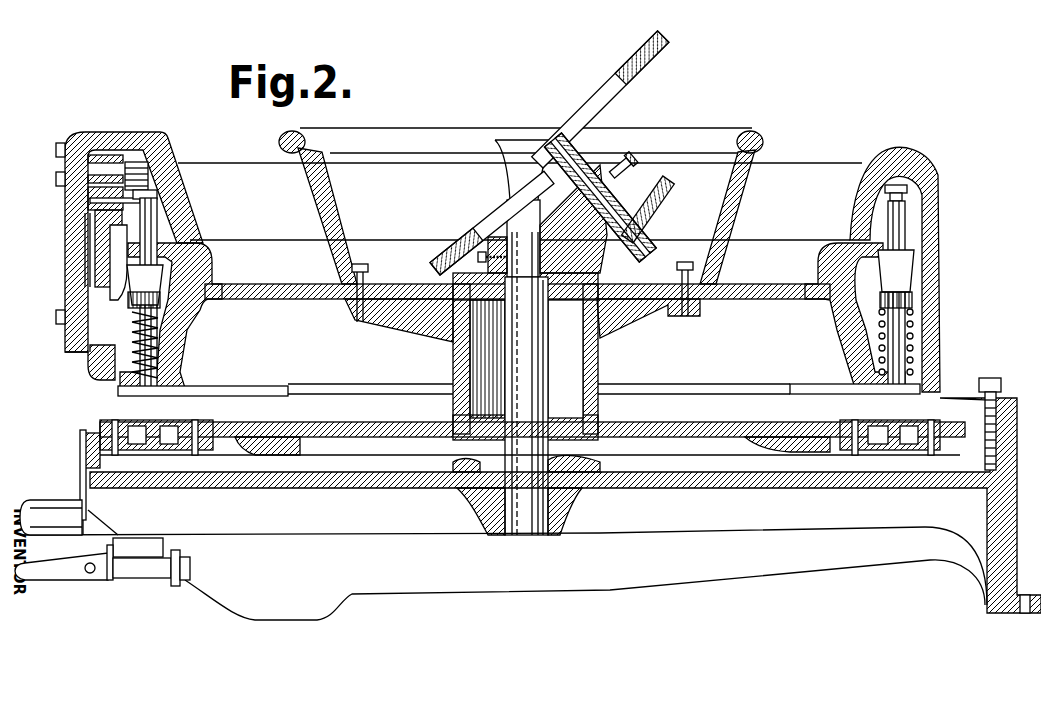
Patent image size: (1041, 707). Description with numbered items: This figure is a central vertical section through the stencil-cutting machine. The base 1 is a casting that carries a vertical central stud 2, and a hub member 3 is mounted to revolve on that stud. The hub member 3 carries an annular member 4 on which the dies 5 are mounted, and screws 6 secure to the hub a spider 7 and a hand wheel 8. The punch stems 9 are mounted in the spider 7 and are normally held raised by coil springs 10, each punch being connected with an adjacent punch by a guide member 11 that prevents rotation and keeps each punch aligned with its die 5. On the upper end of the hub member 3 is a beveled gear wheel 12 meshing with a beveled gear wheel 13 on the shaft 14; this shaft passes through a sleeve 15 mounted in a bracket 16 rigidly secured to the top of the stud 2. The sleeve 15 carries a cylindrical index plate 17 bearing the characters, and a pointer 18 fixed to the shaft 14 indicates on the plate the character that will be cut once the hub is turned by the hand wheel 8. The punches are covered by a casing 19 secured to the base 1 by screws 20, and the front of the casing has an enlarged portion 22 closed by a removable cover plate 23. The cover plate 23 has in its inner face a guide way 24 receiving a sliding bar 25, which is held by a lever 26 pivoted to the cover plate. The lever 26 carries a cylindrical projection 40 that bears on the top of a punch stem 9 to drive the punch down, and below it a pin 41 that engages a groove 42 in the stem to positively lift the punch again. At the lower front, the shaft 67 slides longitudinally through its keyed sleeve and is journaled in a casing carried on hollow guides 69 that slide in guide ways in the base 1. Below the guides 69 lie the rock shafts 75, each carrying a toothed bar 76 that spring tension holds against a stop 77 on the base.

The base casting 1 is at (530, 509).
The vertical central stud 2 is at (527, 390).
The hub member 3 is at (598, 354).
The annular member 4 is at (777, 437).
The dies 5 is at (155, 450).
The screws 6 is at (361, 322).
The spider 7 is at (803, 284).
The hand wheel 8 is at (742, 130).
The punch stems 9 is at (158, 234).
The coil springs 10 is at (168, 340).
The guide member 11 is at (170, 277).
The beveled gear wheel 12 is at (437, 312).
The beveled gear wheel 13 is at (657, 207).
The shaft 14 is at (585, 185).
The sleeve 15 is at (632, 200).
The bracket 16 is at (556, 222).
The cylindrical index plate 17 is at (630, 70).
The pointer 18 is at (477, 222).
The casing 19 is at (803, 199).
The screws 20 is at (991, 378).
The enlarged portion 22 is at (117, 134).
The cover plate 23 is at (80, 284).
The guide way 24 is at (83, 229).
The sliding bar 25 is at (82, 216).
The lever 26 is at (125, 158).
The cylindrical projection 40 is at (150, 172).
The pin 41 is at (113, 278).
The groove 42 is at (160, 197).
The shaft 67 is at (66, 498).
The guides 69 is at (58, 527).
The rock shafts 75 is at (140, 568).
The bar 76 is at (80, 570).
The stops 77 is at (110, 580).